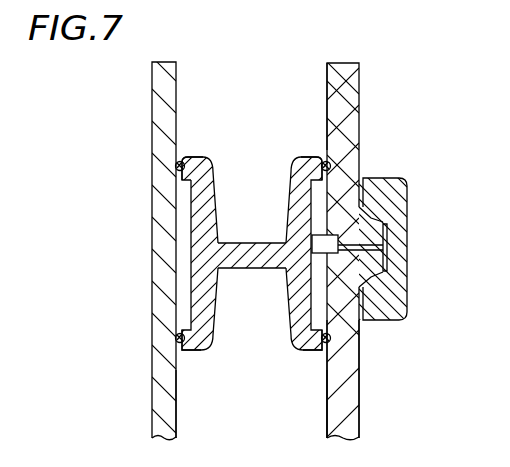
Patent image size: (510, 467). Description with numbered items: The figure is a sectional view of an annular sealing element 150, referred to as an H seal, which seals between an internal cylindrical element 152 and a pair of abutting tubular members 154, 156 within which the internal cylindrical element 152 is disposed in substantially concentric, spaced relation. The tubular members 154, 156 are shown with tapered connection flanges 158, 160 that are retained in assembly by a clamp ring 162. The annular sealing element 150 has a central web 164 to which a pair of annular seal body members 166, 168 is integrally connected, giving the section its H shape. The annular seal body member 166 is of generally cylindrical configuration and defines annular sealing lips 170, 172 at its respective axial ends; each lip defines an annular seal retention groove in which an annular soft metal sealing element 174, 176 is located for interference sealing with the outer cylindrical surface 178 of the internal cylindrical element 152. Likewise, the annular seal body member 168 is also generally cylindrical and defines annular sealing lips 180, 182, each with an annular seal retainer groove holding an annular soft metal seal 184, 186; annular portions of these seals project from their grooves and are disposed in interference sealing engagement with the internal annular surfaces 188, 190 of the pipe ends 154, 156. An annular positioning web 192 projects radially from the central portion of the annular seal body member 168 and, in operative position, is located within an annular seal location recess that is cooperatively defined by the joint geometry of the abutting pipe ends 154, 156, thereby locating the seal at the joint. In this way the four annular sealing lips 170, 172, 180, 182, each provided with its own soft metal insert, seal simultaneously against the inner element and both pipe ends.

The annular sealing element 150 is at (253, 237).
The internal cylindrical element 152 is at (152, 410).
The tubular member 154 is at (350, 79).
The tubular member 156 is at (361, 420).
The tapered connection flange 158 is at (371, 224).
The tapered connection flange 160 is at (372, 264).
The clamp ring 162 is at (393, 315).
The central web 164 is at (258, 270).
The annular seal body member 166 is at (191, 215).
The annular seal body member 168 is at (290, 215).
The annular sealing lip 170 is at (182, 160).
The annular sealing lip 172 is at (183, 350).
The annular soft metal sealing element 174 is at (176, 167).
The annular soft metal sealing element 176 is at (176, 337).
The outer cylindrical surface 178 is at (177, 410).
The annular sealing lip 180 is at (316, 157).
The annular sealing lip 182 is at (328, 350).
The annular soft metal seal 184 is at (330, 167).
The annular soft metal seal 186 is at (331, 341).
The internal annular surface 188 is at (327, 90).
The internal annular surface 190 is at (327, 410).
The annular positioning web 192 is at (407, 298).